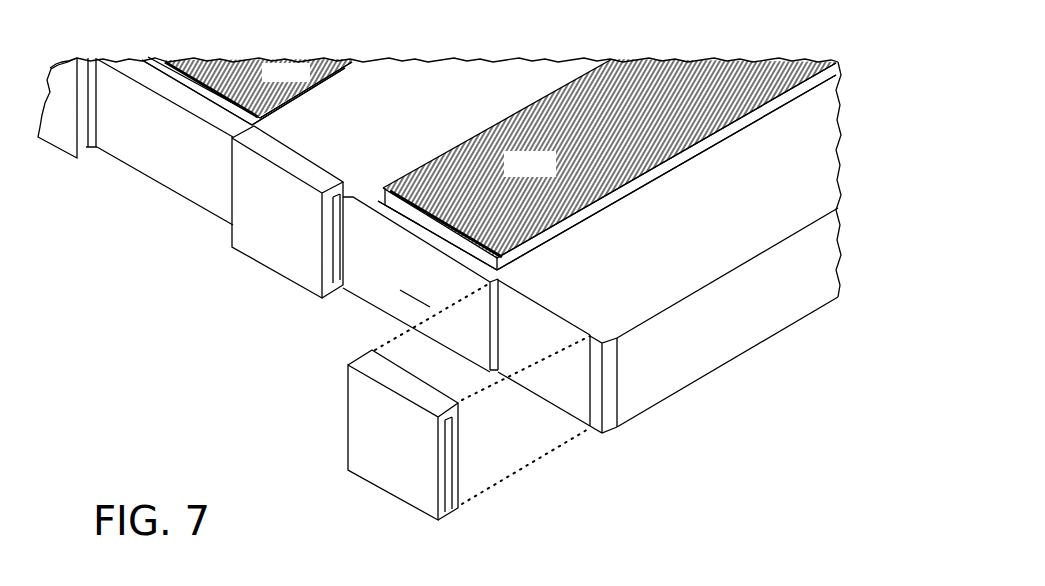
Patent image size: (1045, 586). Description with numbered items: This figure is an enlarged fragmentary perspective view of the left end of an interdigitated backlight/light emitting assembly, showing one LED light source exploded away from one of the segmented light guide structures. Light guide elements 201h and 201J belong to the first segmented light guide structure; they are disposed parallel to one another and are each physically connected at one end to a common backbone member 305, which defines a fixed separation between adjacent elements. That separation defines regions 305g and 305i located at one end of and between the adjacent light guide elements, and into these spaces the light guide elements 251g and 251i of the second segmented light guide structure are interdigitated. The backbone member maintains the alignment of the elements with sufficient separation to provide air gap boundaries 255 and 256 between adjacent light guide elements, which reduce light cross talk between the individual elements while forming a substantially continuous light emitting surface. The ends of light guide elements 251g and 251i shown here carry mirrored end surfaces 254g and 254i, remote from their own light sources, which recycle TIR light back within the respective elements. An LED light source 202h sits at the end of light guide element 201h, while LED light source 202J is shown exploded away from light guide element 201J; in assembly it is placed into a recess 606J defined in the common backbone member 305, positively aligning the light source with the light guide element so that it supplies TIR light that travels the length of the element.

The light guide element 201h is at (397, 120).
The light guide element 201J is at (695, 234).
The LED light source 202h is at (290, 224).
The LED light source 202J is at (407, 435).
The light guide element 251g is at (305, 81).
The light guide element 251i is at (544, 173).
The mirrored end surface 254g is at (213, 83).
The mirrored end surface 254i is at (422, 292).
The air gap boundary 255 is at (338, 76).
The air gap boundary 256 is at (513, 111).
The common backbone member 305 is at (458, 223).
The region 305g is at (213, 114).
The region 305i is at (412, 224).
The recess 606J is at (550, 350).